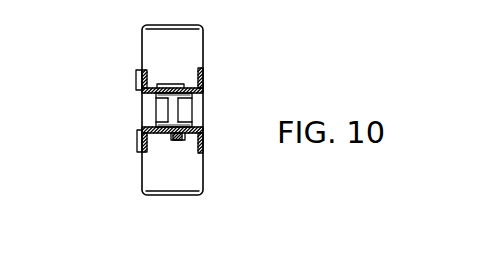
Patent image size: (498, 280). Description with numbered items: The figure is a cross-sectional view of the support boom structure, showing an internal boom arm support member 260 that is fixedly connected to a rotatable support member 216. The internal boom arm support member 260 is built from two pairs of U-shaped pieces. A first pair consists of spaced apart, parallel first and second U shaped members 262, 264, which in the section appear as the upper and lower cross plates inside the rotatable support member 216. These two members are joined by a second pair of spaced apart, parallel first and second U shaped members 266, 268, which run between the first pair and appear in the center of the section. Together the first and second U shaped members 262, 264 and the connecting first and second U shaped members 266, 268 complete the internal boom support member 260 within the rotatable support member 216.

The internal boom arm support member 260 is at (125, 93).
The rotatable support member 216 is at (187, 54).
The first U shaped member 262 is at (204, 80).
The second U shaped member 264 is at (204, 140).
The first U shaped member 266 is at (168, 113).
The second U shaped member 268 is at (192, 113).